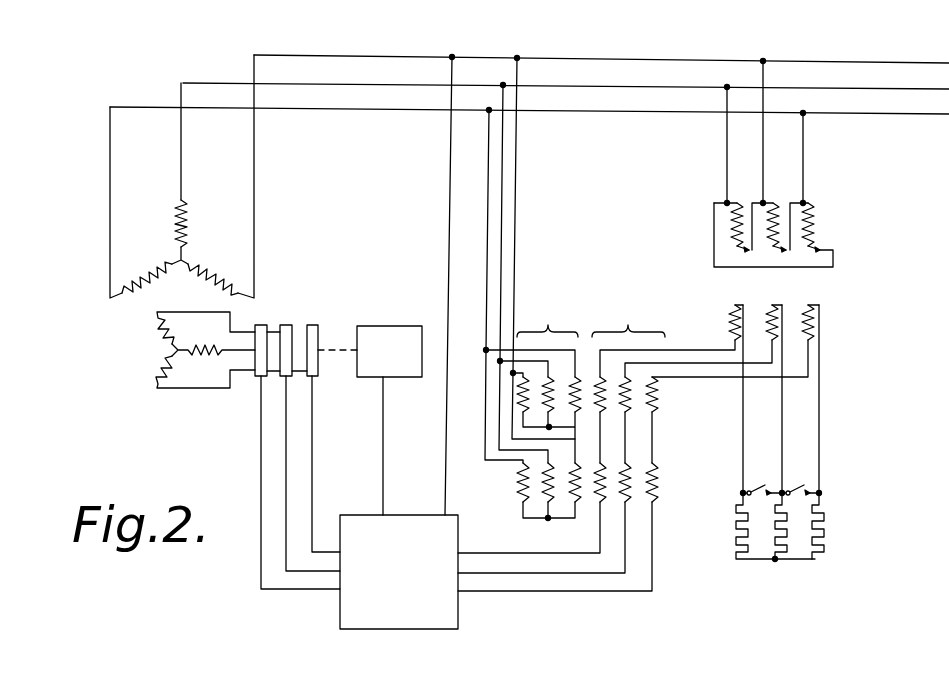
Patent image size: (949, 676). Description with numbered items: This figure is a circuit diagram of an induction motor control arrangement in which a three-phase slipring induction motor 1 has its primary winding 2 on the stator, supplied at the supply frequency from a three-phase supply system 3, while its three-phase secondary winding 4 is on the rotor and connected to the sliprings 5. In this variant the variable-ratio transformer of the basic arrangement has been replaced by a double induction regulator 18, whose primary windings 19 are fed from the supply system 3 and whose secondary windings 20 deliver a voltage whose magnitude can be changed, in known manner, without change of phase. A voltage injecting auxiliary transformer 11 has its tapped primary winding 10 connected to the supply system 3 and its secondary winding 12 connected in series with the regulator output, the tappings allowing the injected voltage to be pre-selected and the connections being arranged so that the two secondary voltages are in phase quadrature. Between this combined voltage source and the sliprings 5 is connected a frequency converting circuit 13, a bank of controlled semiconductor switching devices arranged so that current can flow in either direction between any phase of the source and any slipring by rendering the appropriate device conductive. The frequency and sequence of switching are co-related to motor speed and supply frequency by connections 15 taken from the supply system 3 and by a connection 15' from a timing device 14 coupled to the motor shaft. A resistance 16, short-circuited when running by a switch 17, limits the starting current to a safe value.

The slipring induction motor 1 is at (188, 299).
The primary winding 2 is at (180, 247).
The 3-phase supply system 3 is at (529, 86).
The secondary winding 4 is at (193, 350).
The sliprings 5 is at (297, 440).
The primary winding 10 is at (779, 164).
The voltage injecting auxiliary transformer 11 is at (826, 300).
The secondary winding 12 is at (799, 399).
The frequency converting circuit 13 is at (408, 579).
The timing device 14 is at (402, 361).
The connections 15 is at (436, 286).
The connection 15' is at (404, 446).
The resistance 16 is at (798, 527).
The switch 17 is at (781, 477).
The double induction regulator 18 is at (580, 548).
The primary windings 19 is at (549, 378).
The secondary windings 20 is at (700, 398).